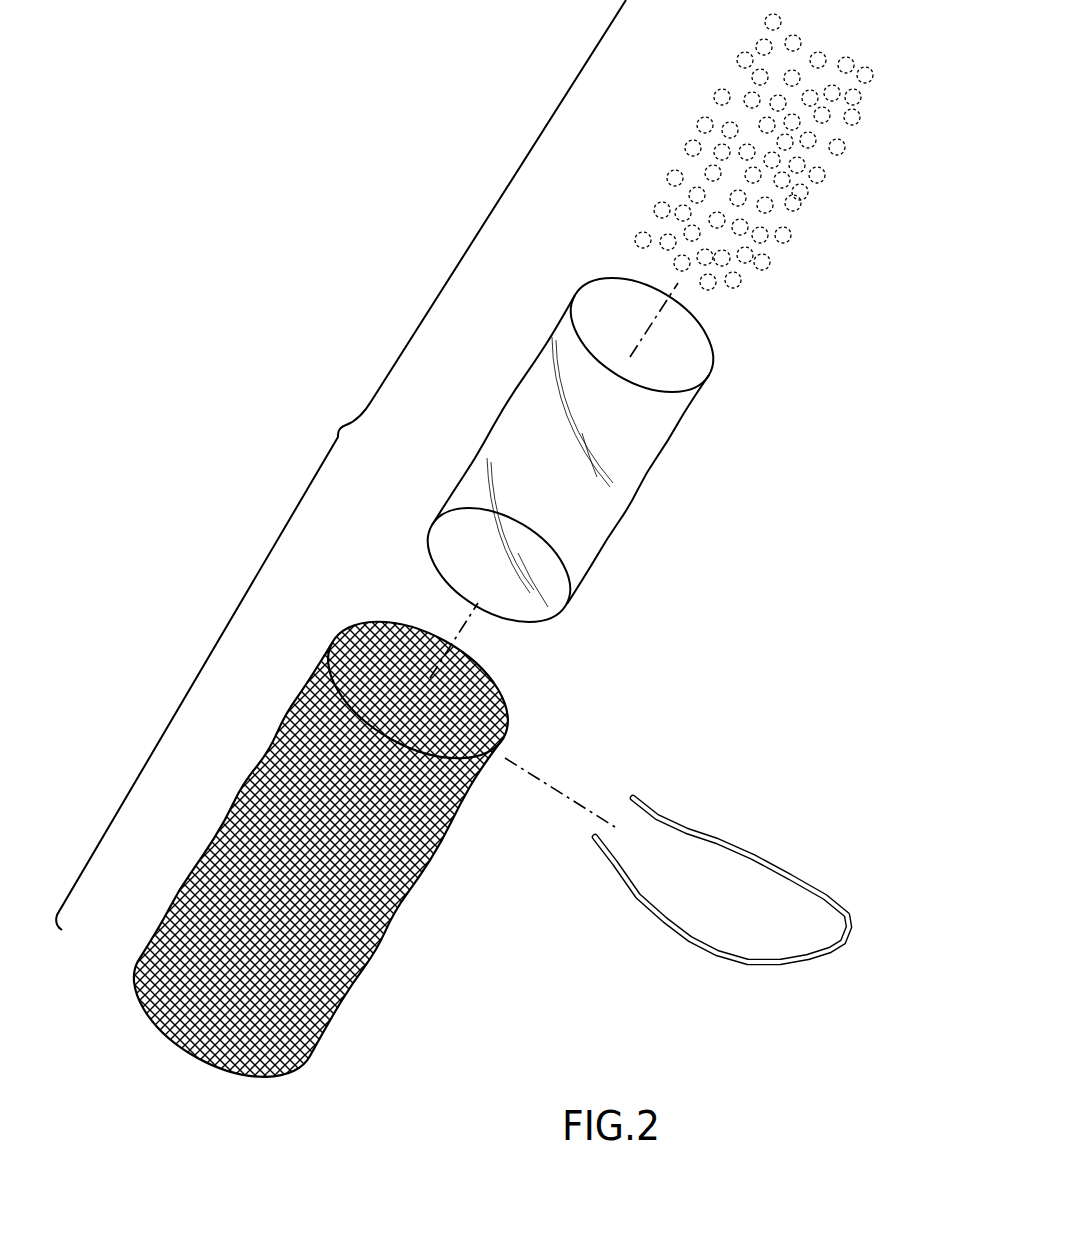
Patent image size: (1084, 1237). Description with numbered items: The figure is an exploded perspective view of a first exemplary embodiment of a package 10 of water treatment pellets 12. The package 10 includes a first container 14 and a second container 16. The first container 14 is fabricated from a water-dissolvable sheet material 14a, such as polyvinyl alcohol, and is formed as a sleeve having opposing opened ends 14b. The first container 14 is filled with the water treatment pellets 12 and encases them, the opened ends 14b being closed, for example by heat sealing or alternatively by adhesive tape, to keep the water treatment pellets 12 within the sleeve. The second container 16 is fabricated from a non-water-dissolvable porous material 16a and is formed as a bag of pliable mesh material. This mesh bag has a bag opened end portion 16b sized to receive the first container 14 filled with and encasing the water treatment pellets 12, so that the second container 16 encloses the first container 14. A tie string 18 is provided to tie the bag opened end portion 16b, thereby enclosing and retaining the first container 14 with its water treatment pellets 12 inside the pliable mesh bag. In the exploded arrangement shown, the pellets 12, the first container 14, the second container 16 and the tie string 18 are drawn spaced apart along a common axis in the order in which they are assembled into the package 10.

The package of water treatment pellets 10 is at (341, 465).
The water treatment pellets 12 is at (793, 147).
The first container 14 is at (598, 461).
The water-dissolvable sheet material 14a is at (593, 528).
The opposing opened ends 14b is at (710, 348).
The second container 16 is at (332, 835).
The non-water-dissolvable porous material 16a is at (425, 837).
The bag opened end portion 16b is at (303, 688).
The tie string 18 is at (773, 860).